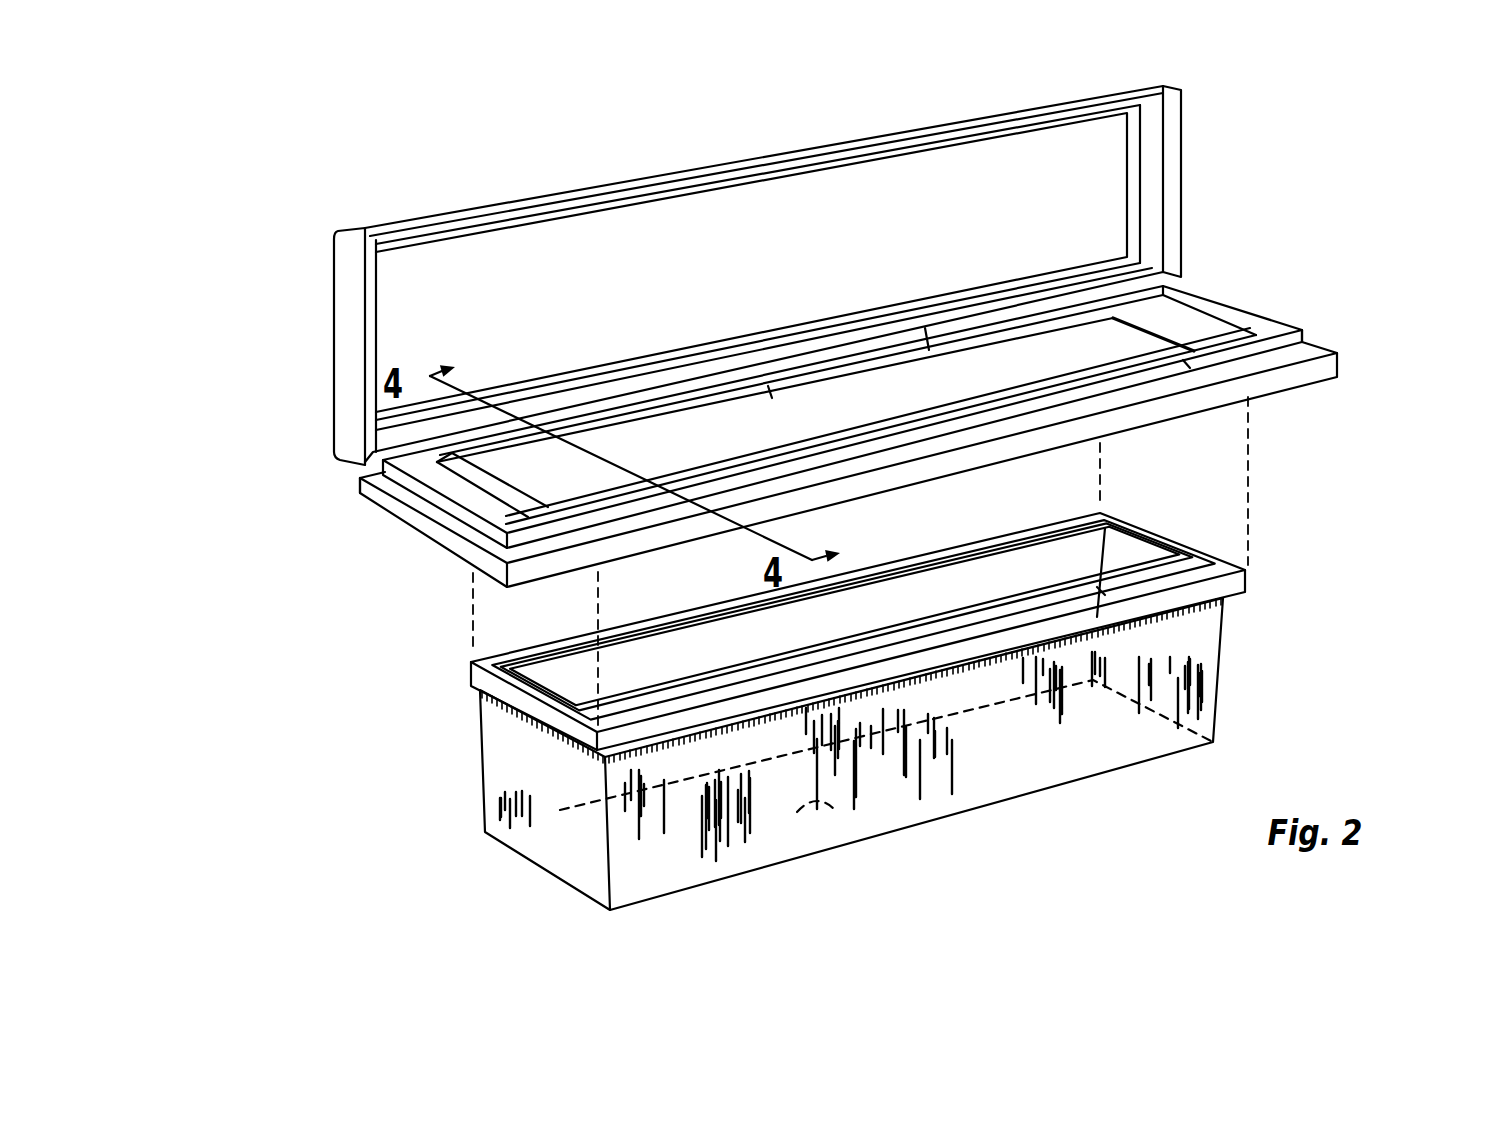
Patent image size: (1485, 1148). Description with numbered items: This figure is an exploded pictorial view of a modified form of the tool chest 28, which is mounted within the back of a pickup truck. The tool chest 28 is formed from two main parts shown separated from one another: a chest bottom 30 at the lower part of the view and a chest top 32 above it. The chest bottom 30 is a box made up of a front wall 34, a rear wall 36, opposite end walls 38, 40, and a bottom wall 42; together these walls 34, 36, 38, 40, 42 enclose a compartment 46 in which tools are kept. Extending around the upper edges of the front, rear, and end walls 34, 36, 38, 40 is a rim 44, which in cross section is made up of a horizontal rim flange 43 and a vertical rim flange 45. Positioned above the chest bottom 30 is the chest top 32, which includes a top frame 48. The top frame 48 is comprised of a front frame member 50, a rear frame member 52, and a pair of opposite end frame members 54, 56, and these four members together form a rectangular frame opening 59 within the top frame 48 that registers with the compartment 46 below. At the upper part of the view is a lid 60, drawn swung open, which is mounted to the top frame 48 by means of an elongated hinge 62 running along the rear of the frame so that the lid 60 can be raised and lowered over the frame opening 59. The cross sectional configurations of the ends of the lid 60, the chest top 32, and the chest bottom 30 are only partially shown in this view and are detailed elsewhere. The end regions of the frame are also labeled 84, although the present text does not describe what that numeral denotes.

The tool chest 28 is at (868, 699).
The chest bottom 30 is at (794, 771).
The chest top 32 is at (833, 442).
The front wall 34 is at (997, 767).
The rear wall 36 is at (927, 597).
The end wall 38 is at (1130, 573).
The end wall 40 is at (565, 843).
The bottom wall 42 is at (840, 815).
The horizontal rim flange 43 is at (585, 713).
The rim 44 is at (822, 631).
The vertical rim flange 45 is at (527, 710).
The compartment 46 is at (1097, 587).
The top frame 48 is at (358, 481).
The front frame member 50 is at (922, 470).
The rear frame member 52 is at (770, 396).
The end frame member 54 is at (1310, 347).
The end frame member 56 is at (1330, 346).
The rectangular frame opening 59 is at (1183, 362).
The lid 60 is at (734, 139).
The elongated hinge 62 is at (930, 333).
The end block 84 is at (1218, 303).